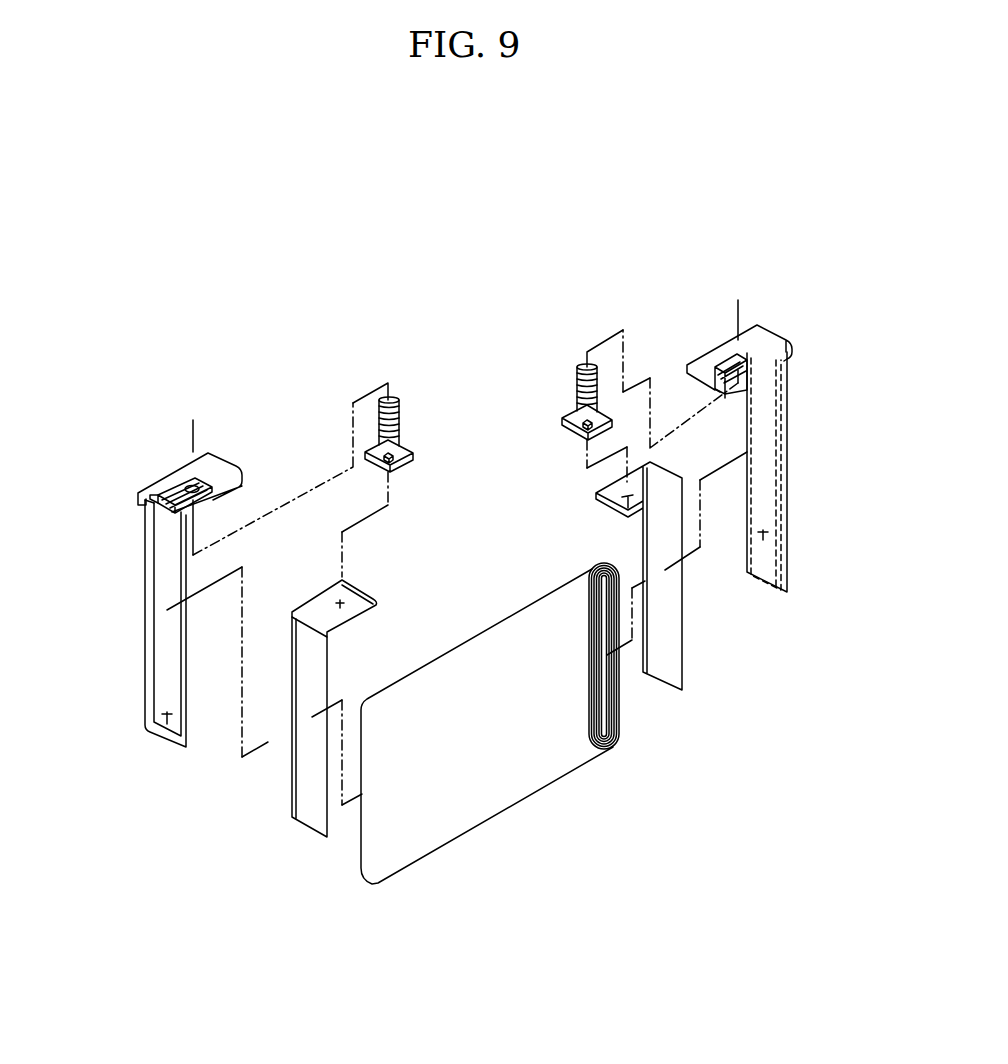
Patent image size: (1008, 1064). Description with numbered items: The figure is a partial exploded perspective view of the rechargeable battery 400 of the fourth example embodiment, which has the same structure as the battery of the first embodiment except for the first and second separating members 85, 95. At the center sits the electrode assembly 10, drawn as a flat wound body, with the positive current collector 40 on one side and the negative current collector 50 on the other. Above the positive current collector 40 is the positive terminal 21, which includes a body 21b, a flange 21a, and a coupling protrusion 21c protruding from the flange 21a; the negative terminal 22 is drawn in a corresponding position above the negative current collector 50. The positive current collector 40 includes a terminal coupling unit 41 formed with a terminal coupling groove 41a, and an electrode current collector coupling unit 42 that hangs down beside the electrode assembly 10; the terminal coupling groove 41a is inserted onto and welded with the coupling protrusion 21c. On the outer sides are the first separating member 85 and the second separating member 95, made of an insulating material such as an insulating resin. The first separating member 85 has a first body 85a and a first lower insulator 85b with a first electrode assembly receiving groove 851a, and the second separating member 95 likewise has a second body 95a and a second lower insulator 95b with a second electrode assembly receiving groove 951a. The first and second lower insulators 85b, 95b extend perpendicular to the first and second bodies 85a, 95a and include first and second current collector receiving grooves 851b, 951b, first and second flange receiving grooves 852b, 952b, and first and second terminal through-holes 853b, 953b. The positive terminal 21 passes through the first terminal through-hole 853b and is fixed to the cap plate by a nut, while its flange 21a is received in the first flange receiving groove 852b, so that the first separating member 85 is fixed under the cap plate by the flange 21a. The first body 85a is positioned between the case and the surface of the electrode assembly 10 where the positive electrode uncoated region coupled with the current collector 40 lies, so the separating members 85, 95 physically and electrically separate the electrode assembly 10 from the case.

The rechargeable battery 400 is at (479, 195).
The electrode assembly 10 is at (621, 733).
The positive terminal 21 is at (405, 404).
The flange 21a is at (410, 450).
The body 21b is at (399, 419).
The coupling protrusion 21c is at (393, 468).
The negative terminal 22 is at (568, 392).
The positive current collector 40 is at (376, 587).
The terminal coupling unit 41 is at (315, 593).
The terminal coupling groove 41a is at (343, 604).
The electrode current collector coupling unit 42 is at (300, 795).
The negative current collector 50 is at (687, 640).
The first separating member 85 is at (226, 455).
The first body 85a is at (147, 612).
The first lower insulator 85b is at (178, 476).
The first electrode assembly receiving groove 851a is at (166, 745).
The first current collector receiving groove 851b is at (155, 516).
The first flange receiving groove 852b is at (170, 497).
The first terminal through-hole 853b is at (218, 507).
The second separating member 95 is at (788, 328).
The second body 95a is at (787, 448).
The second lower insulator 95b is at (712, 352).
The second electrode assembly receiving groove 951a is at (767, 543).
The second current collector receiving groove 951b is at (697, 382).
The second flange receiving groove 952b is at (737, 357).
The second terminal through-hole 953b is at (727, 384).